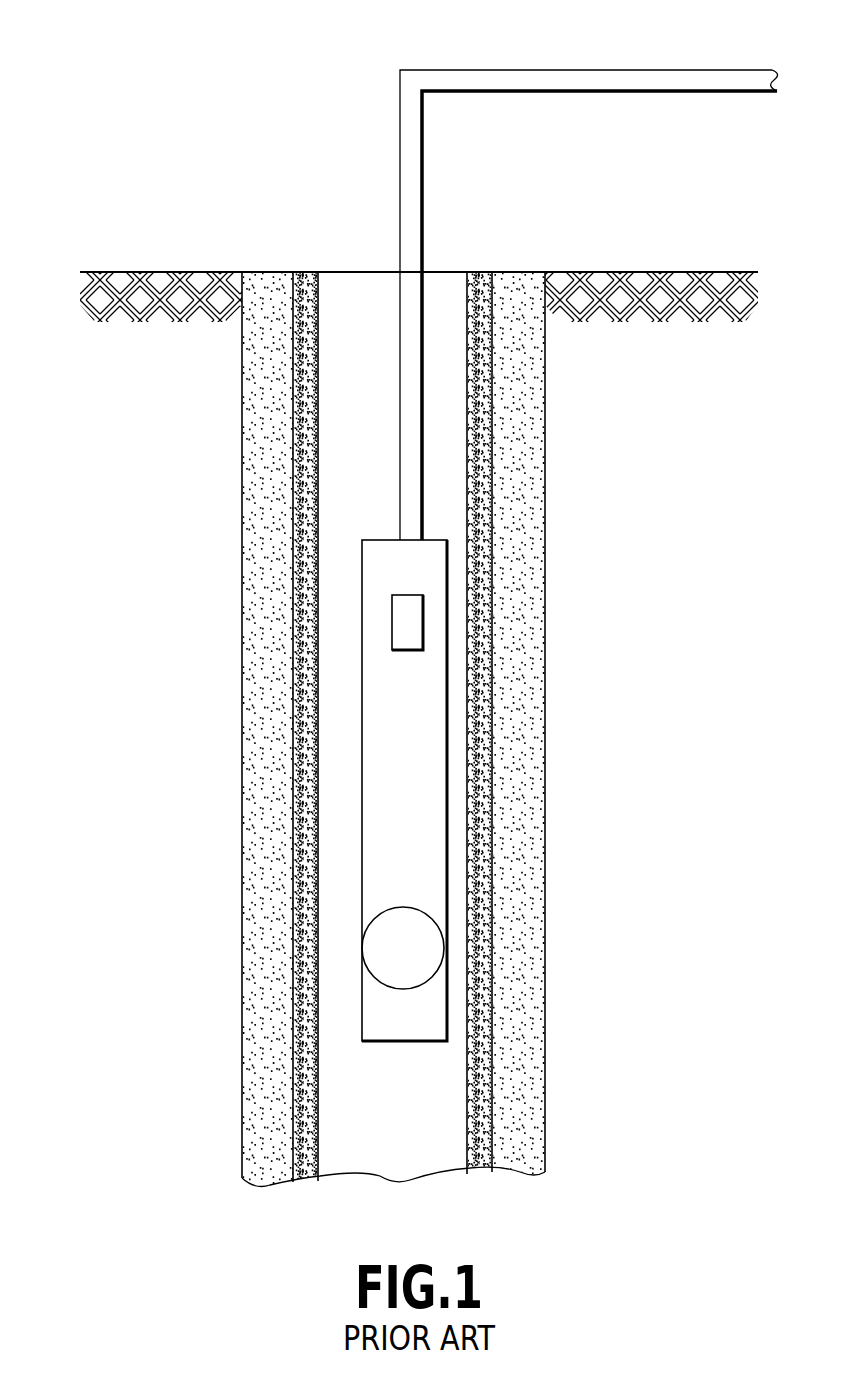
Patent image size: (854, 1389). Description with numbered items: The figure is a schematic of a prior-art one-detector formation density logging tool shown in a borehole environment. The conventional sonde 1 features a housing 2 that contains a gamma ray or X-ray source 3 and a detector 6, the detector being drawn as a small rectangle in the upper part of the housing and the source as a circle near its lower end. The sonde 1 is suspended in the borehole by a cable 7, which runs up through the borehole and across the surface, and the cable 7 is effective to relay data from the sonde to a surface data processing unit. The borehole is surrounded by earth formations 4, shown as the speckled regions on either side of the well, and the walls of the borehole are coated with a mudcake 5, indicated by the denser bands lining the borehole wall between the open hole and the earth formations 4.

The sonde 1 is at (370, 365).
The housing 2 is at (447, 806).
The gamma ray source 3 is at (431, 950).
The earth formations 4 is at (267, 708).
The mudcake 5 is at (295, 960).
The detector 6 is at (416, 619).
The cable 7 is at (603, 70).